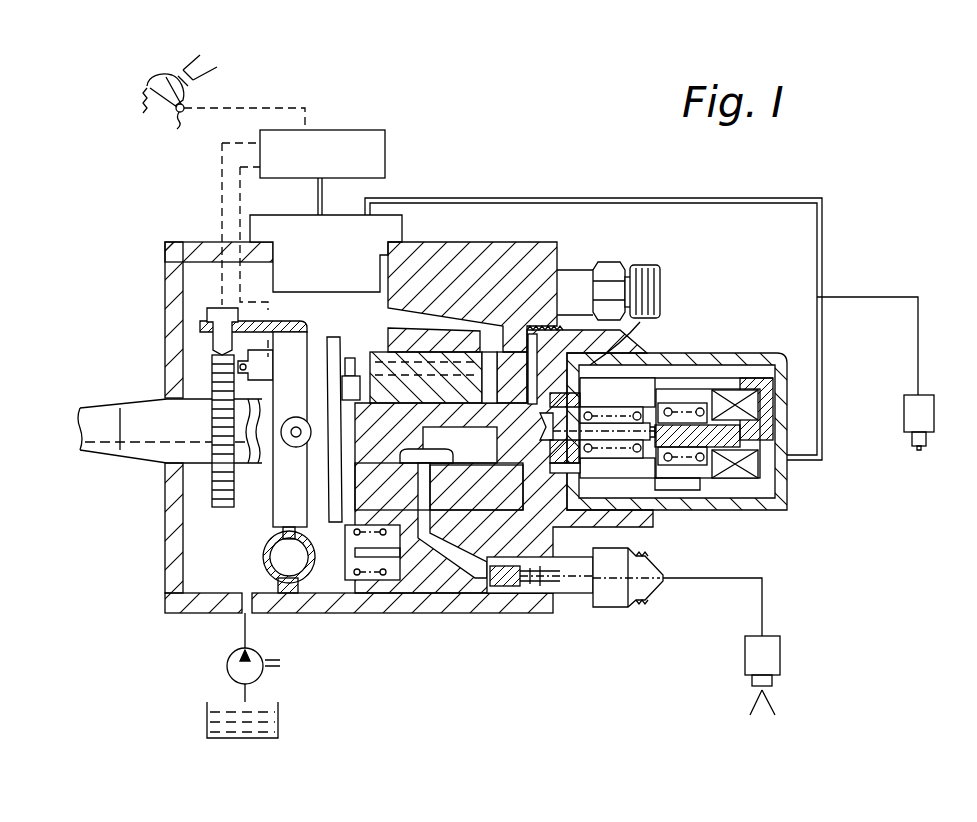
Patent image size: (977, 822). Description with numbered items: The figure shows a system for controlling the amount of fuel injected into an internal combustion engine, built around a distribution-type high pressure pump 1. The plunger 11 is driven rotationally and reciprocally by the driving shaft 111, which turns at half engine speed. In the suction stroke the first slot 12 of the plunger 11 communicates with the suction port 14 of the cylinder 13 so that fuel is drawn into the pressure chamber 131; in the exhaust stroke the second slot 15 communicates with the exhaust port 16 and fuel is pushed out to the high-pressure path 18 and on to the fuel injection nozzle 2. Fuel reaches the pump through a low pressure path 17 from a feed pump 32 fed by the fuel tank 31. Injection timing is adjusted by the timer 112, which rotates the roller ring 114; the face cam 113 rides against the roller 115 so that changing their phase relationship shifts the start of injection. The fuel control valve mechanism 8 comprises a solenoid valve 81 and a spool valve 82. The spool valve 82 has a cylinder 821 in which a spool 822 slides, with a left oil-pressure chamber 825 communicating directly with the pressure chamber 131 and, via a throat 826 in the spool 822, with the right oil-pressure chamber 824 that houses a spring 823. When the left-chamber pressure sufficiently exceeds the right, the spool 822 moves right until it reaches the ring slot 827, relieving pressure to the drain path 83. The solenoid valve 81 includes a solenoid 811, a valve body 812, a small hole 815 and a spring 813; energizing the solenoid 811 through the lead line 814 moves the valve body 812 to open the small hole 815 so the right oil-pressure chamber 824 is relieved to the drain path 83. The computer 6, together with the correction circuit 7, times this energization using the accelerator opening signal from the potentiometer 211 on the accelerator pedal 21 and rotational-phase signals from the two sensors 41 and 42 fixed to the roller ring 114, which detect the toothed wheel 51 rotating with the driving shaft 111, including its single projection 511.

The high pressure pump 1 is at (150, 553).
The fuel injection nozzle 2 is at (781, 660).
The computer 6 is at (373, 131).
The correction circuit 7 is at (352, 213).
The fuel control valve mechanism 8 is at (866, 534).
The plunger 11 is at (388, 450).
The first slot 12 is at (505, 403).
The cylinder 13 is at (380, 495).
The suction port 14 is at (483, 387).
The second slot 15 is at (412, 462).
The exhaust port 16 is at (425, 490).
The low pressure path 17 is at (245, 627).
The high-pressure path 18 is at (732, 582).
The accelerator pedal 21 is at (142, 83).
The fuel tank 31 is at (206, 714).
The feed pump 32 is at (228, 665).
The magnetic resistance element type sensor 41 is at (248, 372).
The magnetic resistance element type sensor 42 is at (220, 336).
The toothed wheel 51 is at (210, 480).
The solenoid valve 81 is at (812, 534).
The spool valve 82 is at (565, 472).
The drain path 83 is at (548, 370).
The driving shaft 111 is at (130, 452).
The timer 112 is at (290, 572).
The face cam 113 is at (337, 522).
The roller ring 114 is at (270, 528).
The roller 115 is at (290, 445).
The pressure chamber 131 is at (455, 548).
The potentiometer 211 is at (178, 130).
The single projection 511 is at (212, 365).
The solenoid 811 is at (757, 378).
The valve body 812 is at (745, 390).
The spring 813 is at (700, 408).
The lead line 814 is at (822, 412).
The small hole 815 is at (712, 484).
The cylinder 821 is at (600, 452).
The spool 822 is at (594, 470).
The spring 823 is at (657, 563).
The right oil-pressure chamber 824 is at (575, 418).
The left oil-pressure chamber 825 is at (615, 325).
The throat 826 is at (567, 380).
The ring slot 827 is at (565, 470).